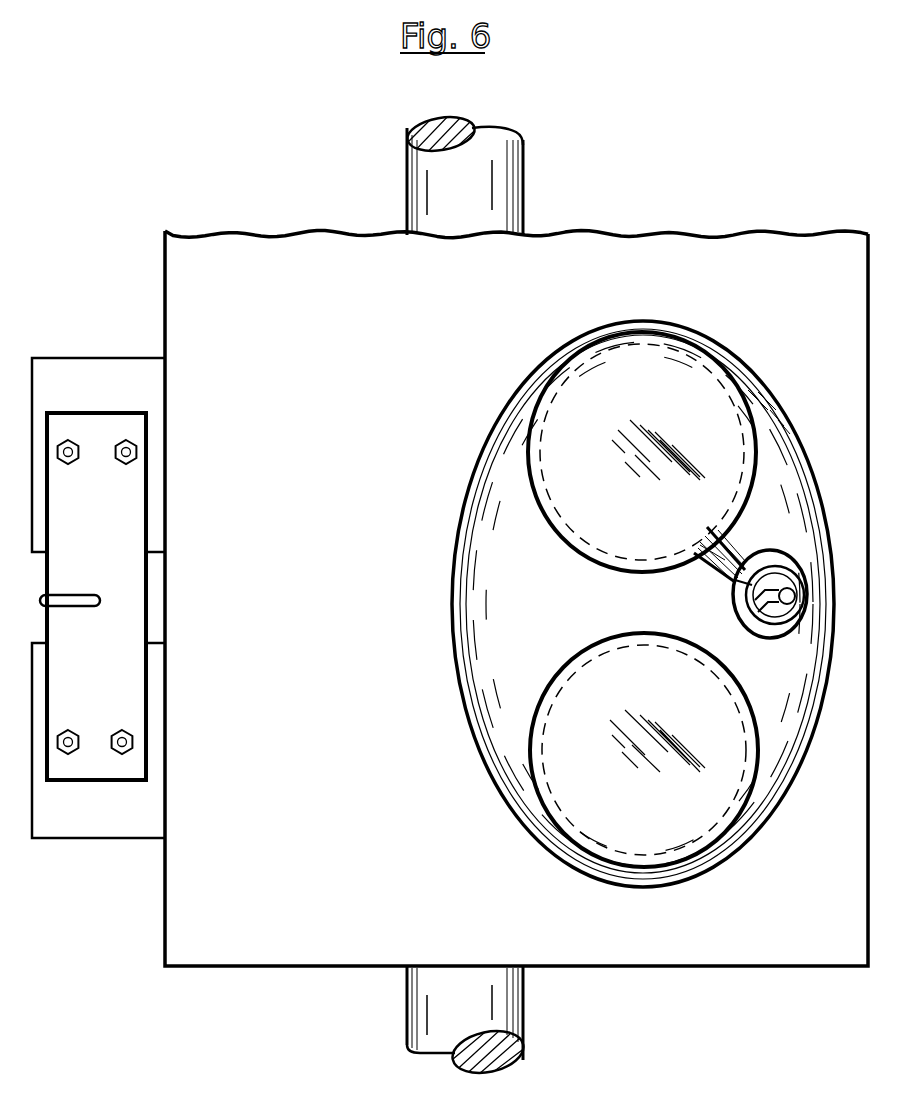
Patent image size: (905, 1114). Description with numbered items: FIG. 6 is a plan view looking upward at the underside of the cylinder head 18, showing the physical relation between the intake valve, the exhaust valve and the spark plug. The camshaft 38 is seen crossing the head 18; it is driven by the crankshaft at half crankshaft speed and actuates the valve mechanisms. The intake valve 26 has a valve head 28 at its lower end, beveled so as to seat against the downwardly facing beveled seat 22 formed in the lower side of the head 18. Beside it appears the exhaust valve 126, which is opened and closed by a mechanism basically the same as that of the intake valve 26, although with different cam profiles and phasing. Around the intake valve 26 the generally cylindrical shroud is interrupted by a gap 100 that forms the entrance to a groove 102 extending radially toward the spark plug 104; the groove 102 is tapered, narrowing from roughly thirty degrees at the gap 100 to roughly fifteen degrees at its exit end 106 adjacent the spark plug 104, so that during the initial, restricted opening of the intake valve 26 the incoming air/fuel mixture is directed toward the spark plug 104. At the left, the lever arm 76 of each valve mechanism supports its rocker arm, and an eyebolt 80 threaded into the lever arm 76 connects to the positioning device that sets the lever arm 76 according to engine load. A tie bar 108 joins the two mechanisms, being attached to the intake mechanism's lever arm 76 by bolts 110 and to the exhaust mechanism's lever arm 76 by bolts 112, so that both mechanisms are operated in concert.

The cylinder head 18 is at (262, 933).
The beveled seat 22 is at (665, 328).
The intake valve 26 is at (594, 400).
The valve head 28 is at (752, 427).
The camshaft 38 is at (523, 183).
The lever arm 76 is at (47, 372).
The eyebolt 80 is at (62, 597).
The gap 100 is at (712, 544).
The groove 102 is at (730, 556).
The spark plug 104 is at (786, 582).
The exit end 106 is at (738, 580).
The tie bar 108 is at (132, 612).
The bolts 110 is at (126, 440).
The bolts 112 is at (122, 755).
The exhaust valve 126 is at (582, 800).